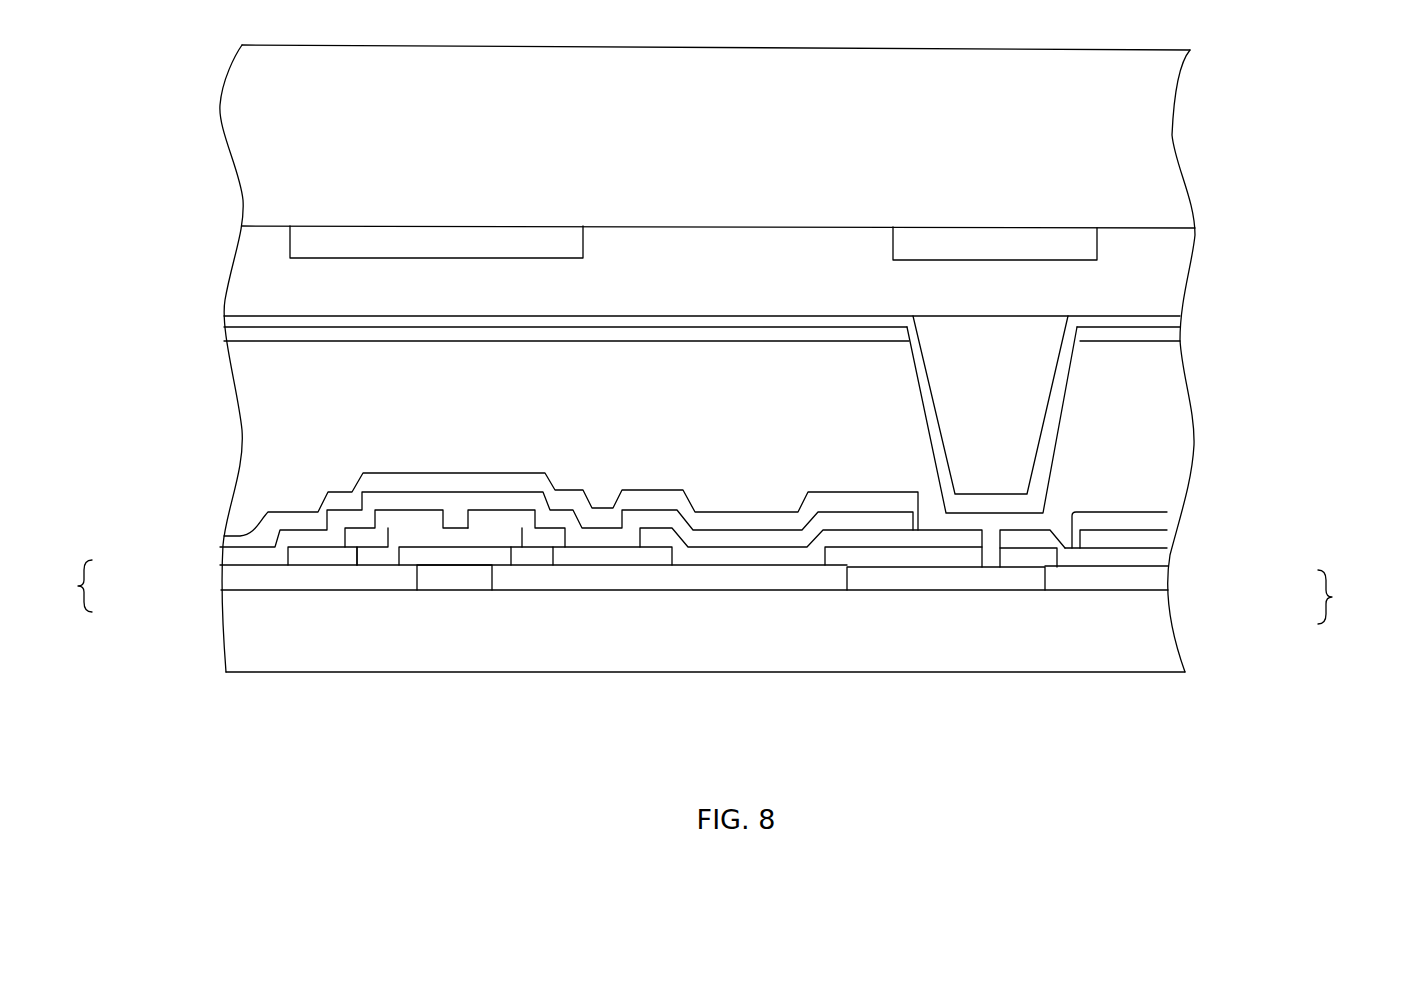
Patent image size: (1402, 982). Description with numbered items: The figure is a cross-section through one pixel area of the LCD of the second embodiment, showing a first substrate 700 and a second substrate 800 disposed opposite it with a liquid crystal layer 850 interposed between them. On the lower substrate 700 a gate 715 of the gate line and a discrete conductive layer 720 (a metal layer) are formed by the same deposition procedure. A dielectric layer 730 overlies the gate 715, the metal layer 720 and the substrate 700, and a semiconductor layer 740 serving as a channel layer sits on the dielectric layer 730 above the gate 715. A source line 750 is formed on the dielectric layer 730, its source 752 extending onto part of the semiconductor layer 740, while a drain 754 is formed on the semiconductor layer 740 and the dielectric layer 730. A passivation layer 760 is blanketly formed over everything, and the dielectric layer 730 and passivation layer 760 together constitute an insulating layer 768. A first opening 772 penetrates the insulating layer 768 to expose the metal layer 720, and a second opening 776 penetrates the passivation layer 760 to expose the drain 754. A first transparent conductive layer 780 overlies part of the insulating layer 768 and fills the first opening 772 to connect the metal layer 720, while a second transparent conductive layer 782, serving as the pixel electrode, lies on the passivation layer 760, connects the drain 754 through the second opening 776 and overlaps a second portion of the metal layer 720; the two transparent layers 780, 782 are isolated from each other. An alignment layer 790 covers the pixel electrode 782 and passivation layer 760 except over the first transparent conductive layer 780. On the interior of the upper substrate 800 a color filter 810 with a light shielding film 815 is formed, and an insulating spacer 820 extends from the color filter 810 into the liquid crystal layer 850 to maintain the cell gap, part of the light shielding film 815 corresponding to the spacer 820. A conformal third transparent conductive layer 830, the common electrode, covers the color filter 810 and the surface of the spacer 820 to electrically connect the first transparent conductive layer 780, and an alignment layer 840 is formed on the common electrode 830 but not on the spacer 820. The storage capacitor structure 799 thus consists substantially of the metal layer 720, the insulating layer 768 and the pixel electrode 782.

The first substrate 700 is at (1165, 655).
The gate 715 is at (452, 580).
The discrete conductive layer 720 is at (975, 580).
The dielectric layer 730 is at (1165, 584).
The semiconductor layer 740 is at (517, 553).
The source line 750 is at (323, 556).
The source 752 is at (392, 518).
The drain 754 is at (648, 557).
The passivation layer 760 is at (1165, 561).
The insulating layer 768 is at (707, 592).
The first opening 772 is at (1005, 540).
The second opening 776 is at (622, 533).
The first transparent conductive layer 780 is at (1032, 523).
The second transparent conductive layer 782 is at (1165, 540).
The alignment layer 790 is at (1165, 521).
The storage capacitor structure 799 is at (908, 600).
The second substrate 800 is at (1163, 133).
The color filter 810 is at (1165, 280).
The light shielding film 815 is at (1100, 238).
The insulating spacer 820 is at (1040, 388).
The third transparent conductive layer 830 is at (1170, 318).
The alignment layer 840 is at (1170, 340).
The liquid crystal layer 850 is at (250, 433).